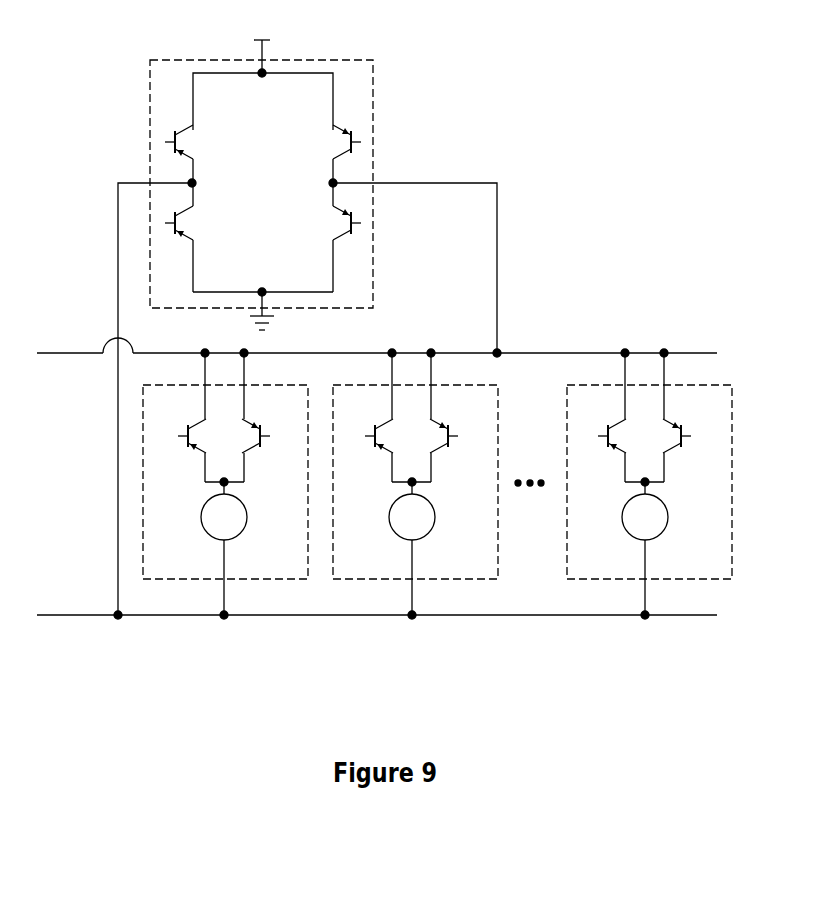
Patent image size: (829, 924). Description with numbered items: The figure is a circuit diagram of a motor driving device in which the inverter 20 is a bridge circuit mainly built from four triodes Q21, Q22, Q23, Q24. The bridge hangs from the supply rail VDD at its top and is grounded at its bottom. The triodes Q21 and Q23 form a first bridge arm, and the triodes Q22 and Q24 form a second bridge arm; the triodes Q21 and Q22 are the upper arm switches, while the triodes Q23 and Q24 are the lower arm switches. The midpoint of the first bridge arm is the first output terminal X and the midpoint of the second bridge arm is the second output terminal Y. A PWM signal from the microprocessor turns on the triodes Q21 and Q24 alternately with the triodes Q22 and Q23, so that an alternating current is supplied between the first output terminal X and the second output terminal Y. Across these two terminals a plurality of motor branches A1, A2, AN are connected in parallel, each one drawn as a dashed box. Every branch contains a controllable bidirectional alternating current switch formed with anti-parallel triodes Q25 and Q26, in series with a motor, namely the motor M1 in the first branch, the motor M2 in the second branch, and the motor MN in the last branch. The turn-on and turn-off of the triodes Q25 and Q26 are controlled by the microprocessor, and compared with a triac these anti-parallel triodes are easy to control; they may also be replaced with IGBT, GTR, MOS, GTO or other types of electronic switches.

The inverter 20 is at (373, 108).
The supply voltage VDD is at (263, 39).
The triode Q21 is at (203, 154).
The triode Q22 is at (319, 154).
The triode Q23 is at (203, 237).
The triode Q24 is at (319, 237).
The first output terminal X is at (203, 181).
The second output terminal Y is at (321, 181).
The motor branch A1 is at (193, 582).
The motor branch A2 is at (382, 582).
The motor branch AN is at (613, 582).
The triode Q25 is at (178, 417).
The triode Q26 is at (270, 417).
The motor M1 is at (224, 548).
The motor M2 is at (412, 548).
The motor MN is at (645, 548).